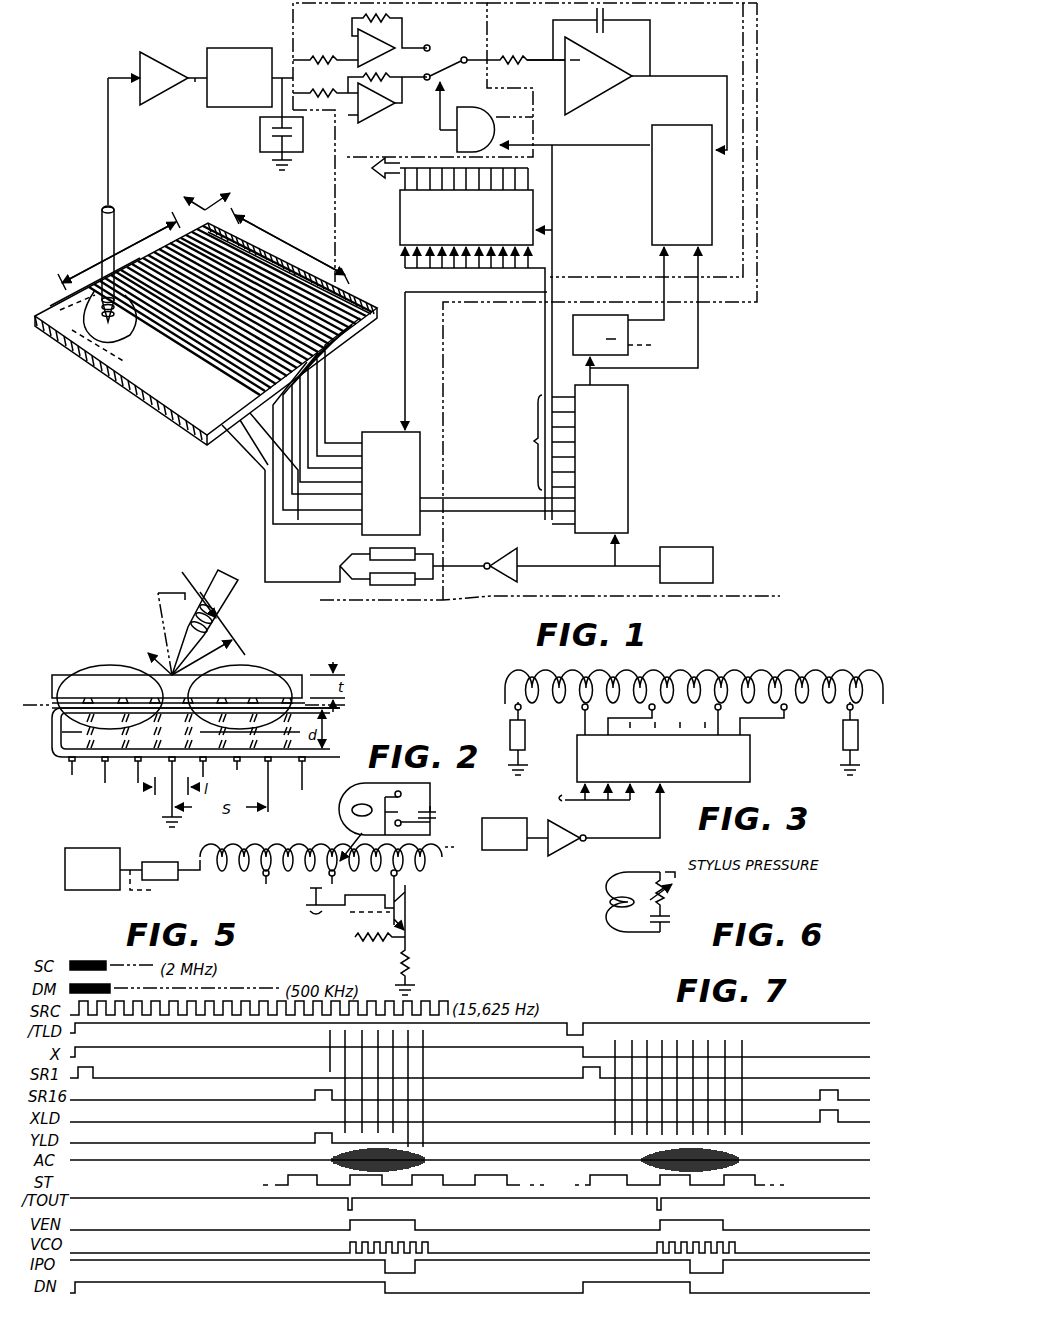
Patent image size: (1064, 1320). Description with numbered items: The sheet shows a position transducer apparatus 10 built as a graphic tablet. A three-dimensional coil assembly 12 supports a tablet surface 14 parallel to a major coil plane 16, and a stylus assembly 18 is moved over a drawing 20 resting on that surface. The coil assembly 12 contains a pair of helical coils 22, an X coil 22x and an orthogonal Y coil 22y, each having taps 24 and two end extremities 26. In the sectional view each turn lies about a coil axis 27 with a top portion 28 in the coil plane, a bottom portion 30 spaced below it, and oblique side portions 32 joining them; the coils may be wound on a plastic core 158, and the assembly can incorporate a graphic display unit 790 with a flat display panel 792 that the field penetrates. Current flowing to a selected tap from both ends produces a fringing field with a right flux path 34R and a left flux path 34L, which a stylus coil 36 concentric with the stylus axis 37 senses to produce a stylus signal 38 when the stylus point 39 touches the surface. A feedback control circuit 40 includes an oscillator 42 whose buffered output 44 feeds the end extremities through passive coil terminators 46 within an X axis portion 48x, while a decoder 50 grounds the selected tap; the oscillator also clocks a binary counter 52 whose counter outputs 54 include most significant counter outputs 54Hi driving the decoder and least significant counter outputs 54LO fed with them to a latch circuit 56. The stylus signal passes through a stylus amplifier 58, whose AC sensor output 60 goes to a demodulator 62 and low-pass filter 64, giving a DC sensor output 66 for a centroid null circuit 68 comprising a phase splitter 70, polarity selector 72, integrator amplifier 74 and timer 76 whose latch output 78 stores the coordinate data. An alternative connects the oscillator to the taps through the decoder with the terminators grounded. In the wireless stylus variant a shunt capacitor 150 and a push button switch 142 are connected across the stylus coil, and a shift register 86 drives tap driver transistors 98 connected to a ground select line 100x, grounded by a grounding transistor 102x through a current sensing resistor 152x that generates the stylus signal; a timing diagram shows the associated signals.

In FIG. 1, the transducer apparatus 10 is at (312, 603).
In FIG. 1, the coil assembly 12 is at (142, 408).
In FIG. 1, the tablet surface 14 is at (40, 312).
In FIG. 2, the tablet surface 14 is at (308, 672).
In FIG. 2, the major coil plane 16 is at (401, 704).
In FIG. 1, the stylus assembly 18 is at (94, 220).
In FIG. 2, the stylus assembly 18 is at (158, 600).
In FIG. 6, the stylus assembly 18 is at (690, 902).
In FIG. 1, the drawing 20 is at (91, 284).
In FIG. 3, the helical coils 22 is at (808, 684).
In FIG. 1, the X coil 22x is at (45, 282).
In FIG. 2, the X coil 22x is at (256, 762).
In FIG. 1, the Y coil 22y is at (68, 340).
In FIG. 2, the Y coil 22y is at (302, 760).
In FIG. 1, the taps 24 is at (352, 358).
In FIG. 2, the taps 24 is at (170, 776).
In FIG. 3, the taps 24 is at (786, 718).
In FIG. 5, the taps 24 is at (390, 874).
In FIG. 1, the end extremities 26 is at (396, 300).
In FIG. 2, the end extremities 26 is at (104, 772).
In FIG. 3, the end extremities 26 is at (515, 706).
In FIG. 5, the end extremities 26 is at (327, 872).
In FIG. 2, the coil axis 27 is at (52, 705).
In FIG. 2, the top portion 28 is at (136, 702).
In FIG. 2, the bottom portion 30 is at (104, 761).
In FIG. 1, the side portions 32 is at (215, 448).
In FIG. 2, the side portions 32 is at (90, 742).
In FIG. 2, the left flux path 34L is at (138, 662).
In FIG. 2, the right flux path 34R is at (212, 664).
In FIG. 1, the stylus coil 36 is at (118, 300).
In FIG. 2, the stylus coil 36 is at (194, 596).
In FIG. 5, the stylus coil 36 is at (362, 812).
In FIG. 6, the stylus coil 36 is at (624, 930).
In FIG. 1, the stylus axis 37 is at (117, 226).
In FIG. 2, the stylus axis 37 is at (228, 588).
In FIG. 1, the stylus signal 38 is at (107, 128).
In FIG. 5, the stylus signal 38 is at (428, 948).
In FIG. 1, the stylus point 39 is at (125, 322).
In FIG. 2, the stylus point 39 is at (196, 675).
In FIG. 1, the feedback control circuit 40 is at (764, 597).
In FIG. 1, the oscillator 42 is at (704, 547).
In FIG. 3, the oscillator 42 is at (504, 818).
In FIG. 5, the oscillator 42 is at (100, 888).
In FIG. 1, the buffered output 44 is at (470, 558).
In FIG. 3, the buffered output 44 is at (650, 832).
In FIG. 1, the coil terminator 46 is at (338, 570).
In FIG. 3, the coil terminator 46 is at (525, 744).
In FIG. 5, the coil terminator 46 is at (182, 880).
In FIG. 1, the X axis portion 48x is at (446, 374).
In FIG. 1, the decoder 50 is at (389, 420).
In FIG. 3, the decoder 50 is at (750, 766).
In FIG. 1, the binary counter 52 is at (628, 500).
In FIG. 1, the counter outputs 54 is at (566, 535).
In FIG. 1, the least significant counter outputs 54LO is at (512, 442).
In FIG. 1, the most significant counter outputs 54Hi is at (512, 492).
In FIG. 3, the most significant counter outputs 54Hi is at (568, 802).
In FIG. 1, the latch circuit 56 is at (392, 240).
In FIG. 1, the stylus amplifier 58 is at (172, 54).
In FIG. 1, the AC sensor output 60 is at (194, 82).
In FIG. 1, the demodulator 62 is at (245, 46).
In FIG. 1, the low-pass filter 64 is at (260, 137).
In FIG. 1, the DC sensor output 66 is at (282, 76).
In FIG. 1, the centroid null circuit 68 is at (292, 10).
In FIG. 1, the phase splitter 70 is at (350, 43).
In FIG. 1, the polarity selector 72 is at (466, 60).
In FIG. 1, the integrator amplifier 74 is at (532, 56).
In FIG. 1, the timer 76 is at (652, 220).
In FIG. 1, the latch output 78 is at (584, 145).
In FIG. 5, the shift register 86 is at (320, 920).
In FIG. 5, the tap driver transistor 98 is at (401, 900).
In FIG. 5, the ground select line 100x is at (409, 915).
In FIG. 5, the grounding transistor 102x is at (411, 932).
In FIG. 5, the push button switch 142 is at (436, 822).
In FIG. 5, the shunt capacitor 150 is at (433, 808).
In FIG. 5, the current sensing resistor 152x is at (413, 967).
In FIG. 2, the plastic core 158 is at (64, 758).
In FIG. 2, the graphic display unit 790 is at (62, 672).
In FIG. 2, the flat display panel 792 is at (51, 686).